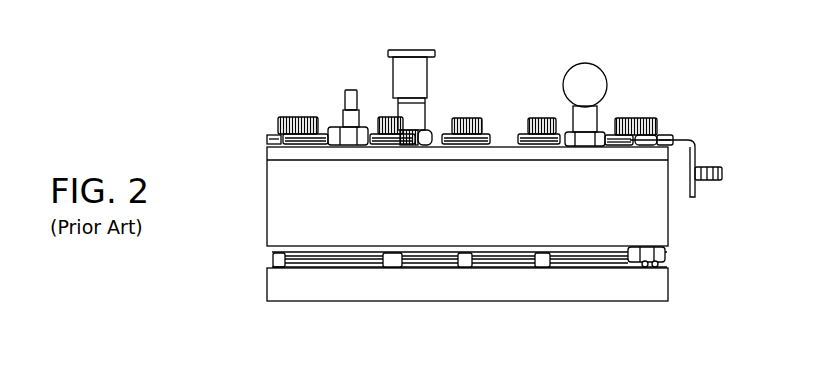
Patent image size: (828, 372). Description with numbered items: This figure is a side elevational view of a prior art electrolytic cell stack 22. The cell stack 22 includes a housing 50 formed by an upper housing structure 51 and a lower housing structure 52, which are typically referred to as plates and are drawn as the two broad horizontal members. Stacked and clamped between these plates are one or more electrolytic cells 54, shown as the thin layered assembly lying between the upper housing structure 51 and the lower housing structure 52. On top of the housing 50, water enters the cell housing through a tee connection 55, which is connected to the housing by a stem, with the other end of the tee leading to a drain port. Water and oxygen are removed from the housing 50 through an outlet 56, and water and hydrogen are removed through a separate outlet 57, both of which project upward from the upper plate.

The cell stack 22 is at (254, 111).
The housing 50 is at (666, 127).
The upper housing structure 51 is at (278, 200).
The lower housing structure 52 is at (278, 287).
The electrolytic cells 54 is at (260, 262).
The tee connection 55 is at (600, 63).
The outlet 56 is at (428, 73).
The outlet 57 is at (342, 100).